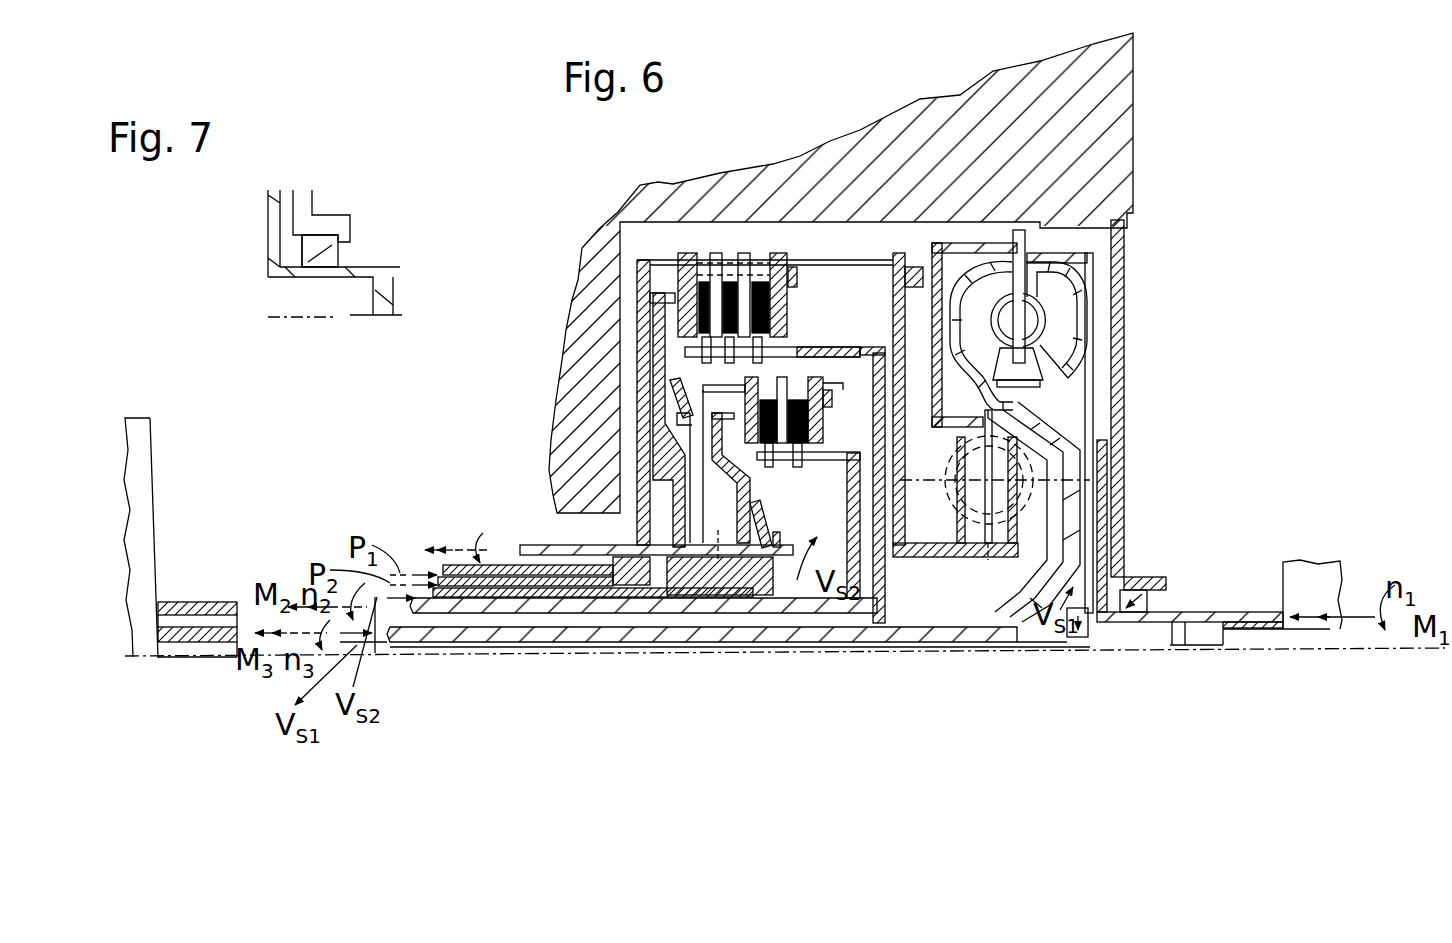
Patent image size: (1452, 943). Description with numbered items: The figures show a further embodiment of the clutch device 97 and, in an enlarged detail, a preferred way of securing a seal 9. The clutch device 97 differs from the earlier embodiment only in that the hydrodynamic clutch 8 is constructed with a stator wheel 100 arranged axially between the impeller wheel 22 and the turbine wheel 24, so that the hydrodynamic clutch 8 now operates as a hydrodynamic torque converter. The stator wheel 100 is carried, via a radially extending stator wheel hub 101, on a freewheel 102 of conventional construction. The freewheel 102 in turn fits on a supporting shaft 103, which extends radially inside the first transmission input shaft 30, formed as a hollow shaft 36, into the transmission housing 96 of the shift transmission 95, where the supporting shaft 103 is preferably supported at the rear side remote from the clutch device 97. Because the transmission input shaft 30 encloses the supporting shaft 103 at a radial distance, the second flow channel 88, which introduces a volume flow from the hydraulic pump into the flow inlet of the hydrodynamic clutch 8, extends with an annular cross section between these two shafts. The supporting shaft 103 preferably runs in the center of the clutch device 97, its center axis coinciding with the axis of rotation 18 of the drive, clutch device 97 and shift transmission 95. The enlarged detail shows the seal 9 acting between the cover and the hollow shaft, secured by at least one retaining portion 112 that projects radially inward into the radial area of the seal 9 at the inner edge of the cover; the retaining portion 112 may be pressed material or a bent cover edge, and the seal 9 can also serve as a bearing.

In FIG. 6, the clutch device 97 is at (774, 148).
In FIG. 6, the turbine wheel 24 is at (975, 297).
In FIG. 6, the impeller wheel 22 is at (1065, 300).
In FIG. 6, the hydrodynamic clutch 8 is at (1055, 328).
In FIG. 6, the stator wheel 100 is at (1025, 367).
In FIG. 6, the stator wheel hub 101 is at (1075, 430).
In FIG. 6, the hollow shaft 36 is at (597, 628).
In FIG. 6, the first transmission input shaft 30 is at (680, 628).
In FIG. 6, the second flow channel 88 is at (793, 642).
In FIG. 6, the supporting shaft 103 is at (888, 647).
In FIG. 6, the freewheel 102 is at (1080, 637).
In FIG. 6, the axis of rotation 18 is at (1307, 648).
In FIG. 6, the shift transmission 95 is at (158, 480).
In FIG. 6, the transmission housing 96 is at (135, 552).
In FIG. 7, the seal 9 is at (312, 263).
In FIG. 7, the retaining portion 112 is at (347, 240).